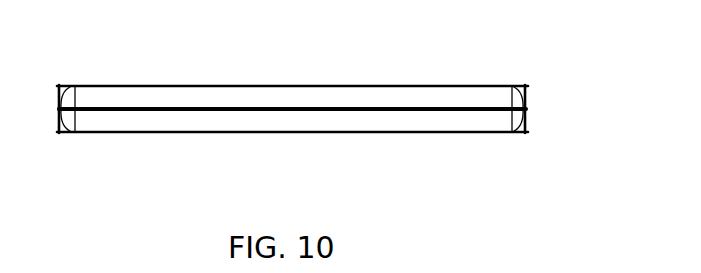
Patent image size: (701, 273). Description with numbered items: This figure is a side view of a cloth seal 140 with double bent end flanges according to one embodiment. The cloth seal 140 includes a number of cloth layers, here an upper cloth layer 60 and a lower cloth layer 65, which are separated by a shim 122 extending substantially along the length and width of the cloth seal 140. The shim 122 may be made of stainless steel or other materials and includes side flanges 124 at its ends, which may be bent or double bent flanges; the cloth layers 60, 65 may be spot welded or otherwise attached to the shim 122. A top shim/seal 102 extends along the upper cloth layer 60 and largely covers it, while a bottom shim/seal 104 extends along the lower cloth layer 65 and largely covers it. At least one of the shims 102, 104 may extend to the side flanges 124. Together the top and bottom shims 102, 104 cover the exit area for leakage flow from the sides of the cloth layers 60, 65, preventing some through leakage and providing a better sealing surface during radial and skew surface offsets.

The upper cloth layer 60 is at (71, 90).
The lower cloth layer 65 is at (68, 133).
The top shim/seal 102 is at (250, 85).
The bottom shim/seal 104 is at (415, 134).
The shim 122 is at (338, 111).
The side flanges 124 is at (528, 89).
The cloth seal 140 is at (290, 61).